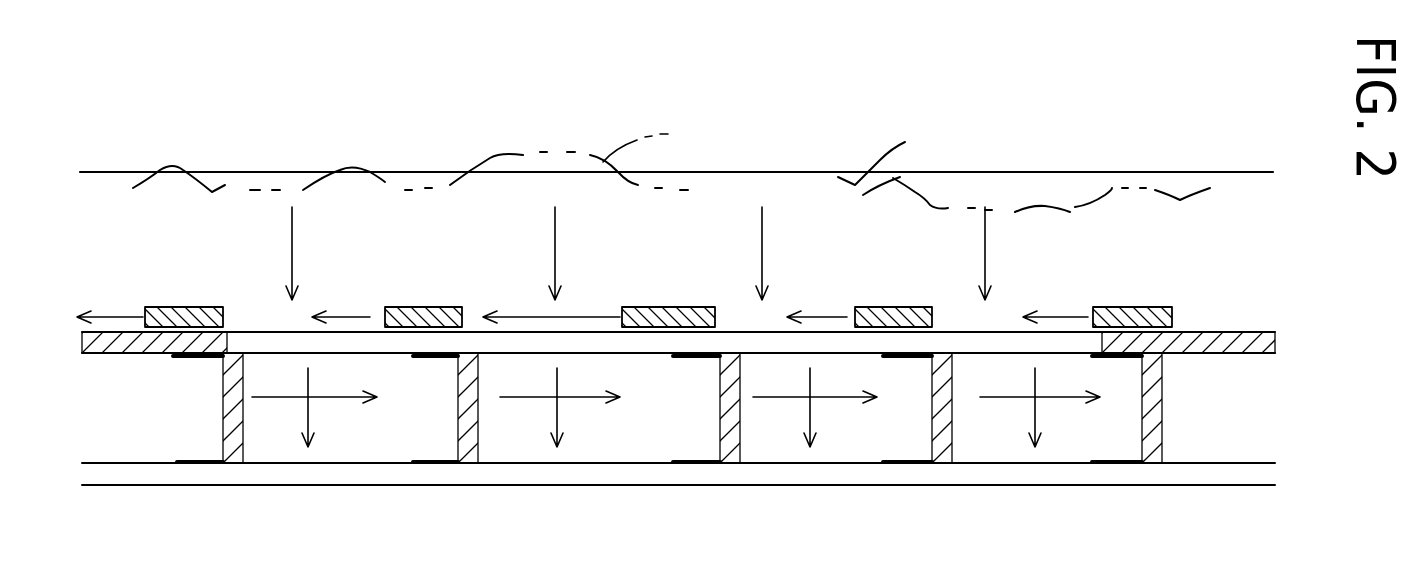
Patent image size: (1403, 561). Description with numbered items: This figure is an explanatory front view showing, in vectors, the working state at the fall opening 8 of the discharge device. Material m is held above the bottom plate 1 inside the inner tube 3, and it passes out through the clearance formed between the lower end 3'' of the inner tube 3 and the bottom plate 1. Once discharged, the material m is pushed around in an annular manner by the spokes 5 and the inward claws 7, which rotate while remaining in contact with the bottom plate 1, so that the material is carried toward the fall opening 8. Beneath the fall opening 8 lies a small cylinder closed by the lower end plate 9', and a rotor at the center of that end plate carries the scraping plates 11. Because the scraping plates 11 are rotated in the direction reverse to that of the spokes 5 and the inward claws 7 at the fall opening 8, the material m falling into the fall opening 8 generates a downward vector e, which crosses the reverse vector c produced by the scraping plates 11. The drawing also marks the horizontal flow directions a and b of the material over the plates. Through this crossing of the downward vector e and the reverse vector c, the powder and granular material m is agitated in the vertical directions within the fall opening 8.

The bottom plate 1 is at (732, 235).
The inner tube 3 is at (676, 167).
The lower end of the inner tube 3'' is at (915, 139).
The spokes 5 is at (662, 306).
The inward claws 7 is at (192, 305).
The fall opening 8 is at (964, 340).
The lower end plate 9' is at (669, 496).
The scraping plates 11 is at (250, 375).
The material m is at (652, 143).
The flow direction a is at (577, 315).
The flow direction b is at (113, 303).
The reverse vector c is at (335, 402).
The downward vector e is at (292, 247).